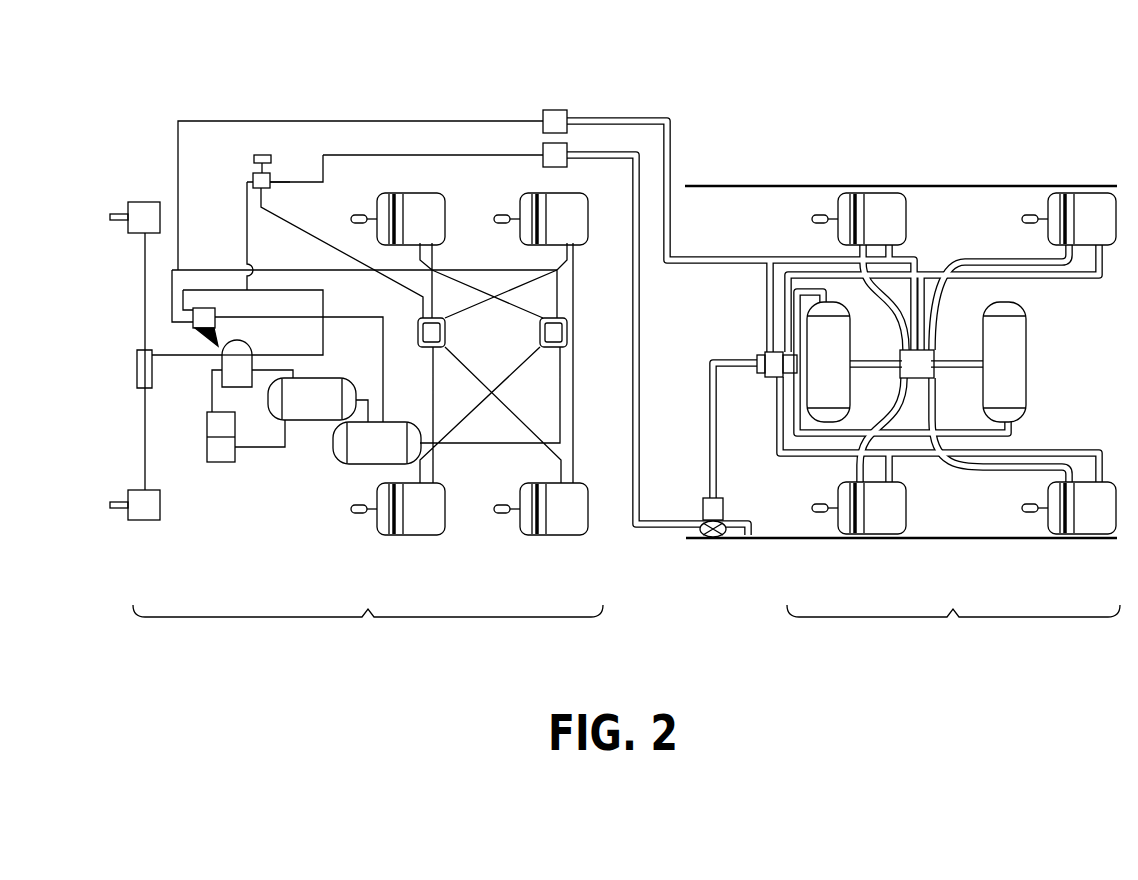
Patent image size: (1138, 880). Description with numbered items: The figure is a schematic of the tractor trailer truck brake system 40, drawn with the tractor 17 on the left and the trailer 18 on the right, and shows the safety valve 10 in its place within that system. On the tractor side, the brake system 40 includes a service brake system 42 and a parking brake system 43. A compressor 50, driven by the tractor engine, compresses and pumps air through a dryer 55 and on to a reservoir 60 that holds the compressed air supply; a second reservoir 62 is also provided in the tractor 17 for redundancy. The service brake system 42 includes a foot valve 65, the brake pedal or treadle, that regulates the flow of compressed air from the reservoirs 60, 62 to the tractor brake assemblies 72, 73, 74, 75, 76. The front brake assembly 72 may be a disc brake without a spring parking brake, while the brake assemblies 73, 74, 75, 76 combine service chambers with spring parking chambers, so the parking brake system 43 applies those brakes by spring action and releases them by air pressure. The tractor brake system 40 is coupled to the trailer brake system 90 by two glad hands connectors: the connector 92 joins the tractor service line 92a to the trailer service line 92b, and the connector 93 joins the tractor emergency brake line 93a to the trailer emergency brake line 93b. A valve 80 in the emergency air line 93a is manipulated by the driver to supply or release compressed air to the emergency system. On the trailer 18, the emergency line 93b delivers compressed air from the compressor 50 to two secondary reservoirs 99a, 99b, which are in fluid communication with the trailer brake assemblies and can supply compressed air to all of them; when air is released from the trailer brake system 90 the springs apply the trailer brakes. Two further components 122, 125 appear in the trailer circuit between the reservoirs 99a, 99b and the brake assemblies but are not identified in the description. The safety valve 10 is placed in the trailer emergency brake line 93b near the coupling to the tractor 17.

The safety valve 10 is at (713, 546).
The tractor 17 is at (368, 629).
The trailer 18 is at (953, 630).
The tractor trailer truck brake system 40 is at (300, 545).
The service brake system 42 is at (176, 135).
The parking brake system 43 is at (243, 212).
The compressor 50 is at (228, 462).
The dryer 55 is at (222, 362).
The reservoir 60 is at (318, 400).
The second reservoir 62 is at (377, 443).
The foot valve 65 is at (193, 333).
The tractor brake assembly 72 is at (145, 200).
The tractor brake assembly 73 is at (410, 536).
The tractor brake assembly 74 is at (410, 192).
The tractor brake assembly 75 is at (550, 536).
The tractor brake assembly 76 is at (548, 192).
The valve 80 is at (258, 155).
The trailer brake system 90 is at (950, 168).
The glad hands connector 92 is at (562, 110).
The service line 92a is at (308, 121).
The service line 92b is at (671, 203).
The glad hands connector 93 is at (568, 146).
The emergency brake line 93a is at (290, 183).
The emergency brake line 93b is at (641, 333).
The secondary reservoir 99a is at (849, 344).
The secondary reservoir 99b is at (1027, 355).
The trailer relay valve 122 is at (767, 380).
The trailer relay valve 125 is at (934, 352).